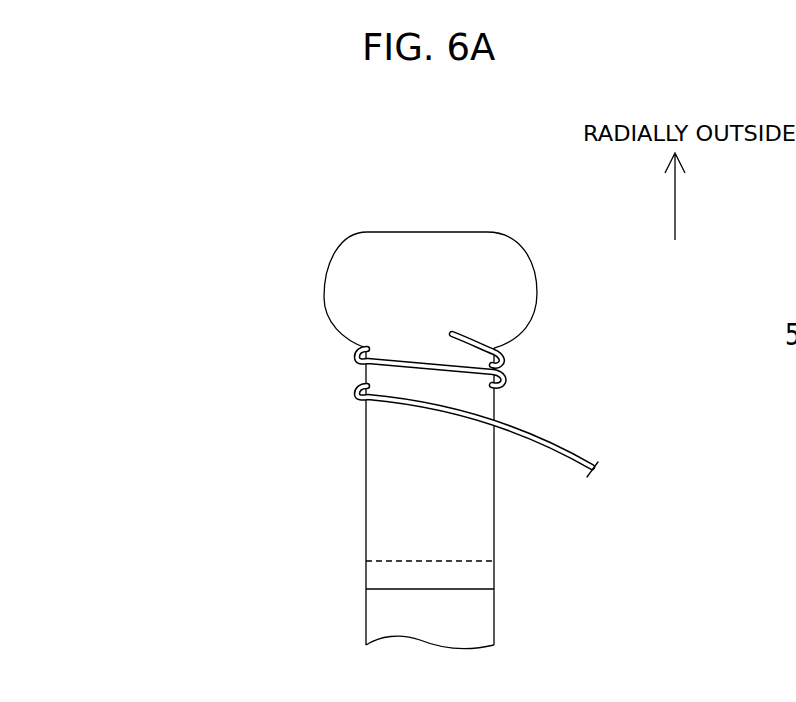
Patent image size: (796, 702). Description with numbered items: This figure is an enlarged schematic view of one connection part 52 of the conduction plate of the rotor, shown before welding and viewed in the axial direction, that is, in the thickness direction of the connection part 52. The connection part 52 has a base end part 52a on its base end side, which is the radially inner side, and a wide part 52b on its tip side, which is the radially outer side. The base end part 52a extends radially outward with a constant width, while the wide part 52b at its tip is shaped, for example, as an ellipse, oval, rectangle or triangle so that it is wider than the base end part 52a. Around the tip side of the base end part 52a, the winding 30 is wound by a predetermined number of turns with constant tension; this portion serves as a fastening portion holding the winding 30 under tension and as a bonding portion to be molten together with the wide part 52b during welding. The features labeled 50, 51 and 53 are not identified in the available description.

The pin assembly 50 is at (381, 379).
The connection part 52 is at (373, 402).
The wide part 52b is at (430, 253).
The base end part 52a is at (383, 496).
The boundary 53 is at (388, 572).
The base portion 51 is at (391, 628).
The winding 30 is at (477, 429).